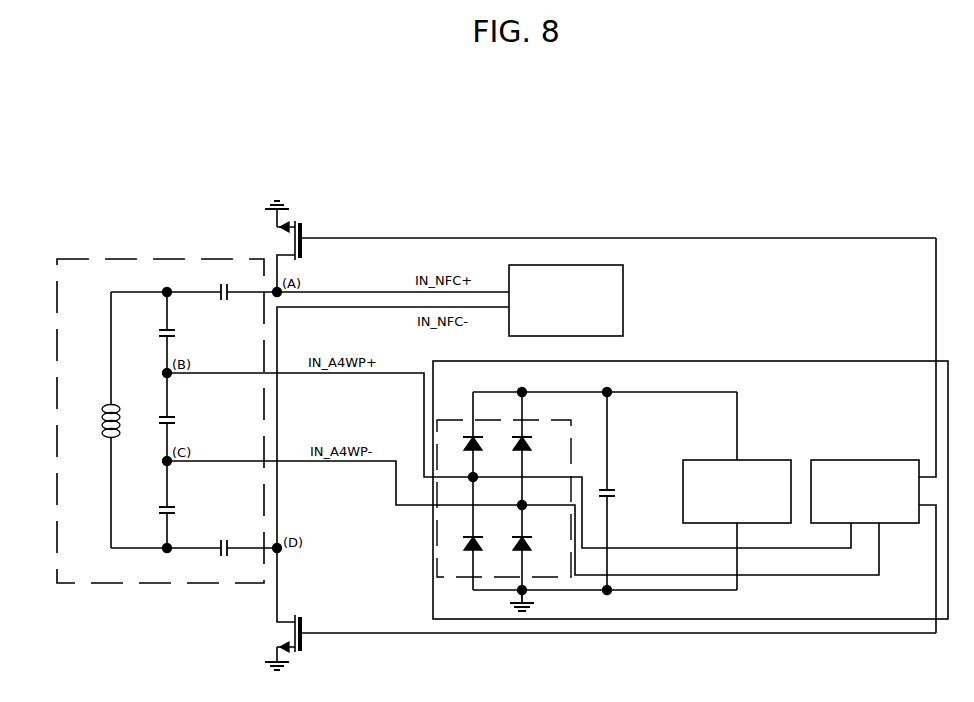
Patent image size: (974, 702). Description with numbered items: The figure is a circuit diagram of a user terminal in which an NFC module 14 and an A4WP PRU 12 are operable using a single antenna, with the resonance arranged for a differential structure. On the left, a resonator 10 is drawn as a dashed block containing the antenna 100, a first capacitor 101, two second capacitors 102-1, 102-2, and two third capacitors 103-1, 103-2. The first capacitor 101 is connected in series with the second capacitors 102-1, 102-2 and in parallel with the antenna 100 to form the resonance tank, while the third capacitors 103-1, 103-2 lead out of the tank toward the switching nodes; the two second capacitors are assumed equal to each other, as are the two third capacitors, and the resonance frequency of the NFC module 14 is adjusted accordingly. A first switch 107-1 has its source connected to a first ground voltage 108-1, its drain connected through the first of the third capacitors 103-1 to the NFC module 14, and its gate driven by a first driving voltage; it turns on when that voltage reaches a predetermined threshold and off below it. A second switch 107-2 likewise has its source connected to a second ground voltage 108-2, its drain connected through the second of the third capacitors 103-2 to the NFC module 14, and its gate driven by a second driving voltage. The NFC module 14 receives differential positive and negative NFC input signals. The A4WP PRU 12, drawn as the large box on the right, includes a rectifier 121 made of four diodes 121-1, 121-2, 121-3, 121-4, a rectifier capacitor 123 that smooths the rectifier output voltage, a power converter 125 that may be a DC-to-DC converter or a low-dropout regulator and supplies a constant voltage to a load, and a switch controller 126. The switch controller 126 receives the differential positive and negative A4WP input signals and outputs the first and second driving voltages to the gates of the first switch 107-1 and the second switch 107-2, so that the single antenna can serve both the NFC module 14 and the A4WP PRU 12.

The resonator 10 is at (155, 262).
The A4WP PRU 12 is at (691, 361).
The NFC module 14 is at (627, 299).
The antenna 100 is at (101, 414).
The first capacitor Ca 101 is at (162, 415).
The second capacitor Cb1 102-1 is at (161, 327).
The second capacitor Cb2 102-2 is at (161, 505).
The third capacitor Cc1 103-1 is at (228, 300).
The third capacitor Cc2 103-2 is at (220, 553).
The first switch SW1 107-1 is at (303, 259).
The second switch SW2 107-2 is at (302, 619).
The first ground voltage 108-1 is at (290, 208).
The second ground voltage 108-2 is at (289, 664).
The rectifier 121 is at (534, 419).
The diode D1 121-1 is at (478, 552).
The diode D2 121-2 is at (478, 452).
The diode D3 121-3 is at (527, 552).
The diode D4 121-4 is at (527, 452).
The rectifier capacitor CRECT 123 is at (612, 500).
The power converter 125 is at (745, 459).
The switch controller 126 is at (873, 459).